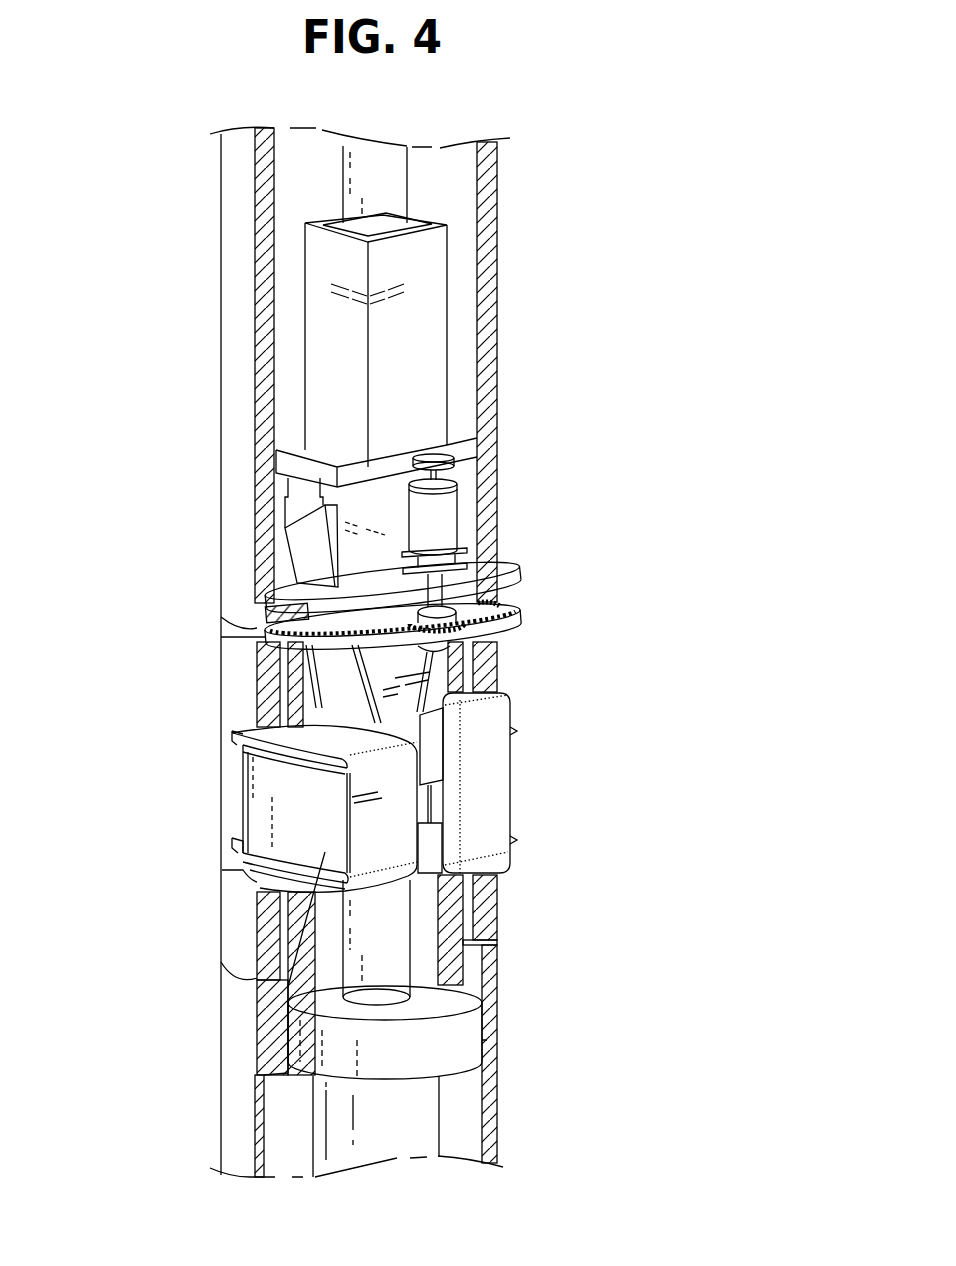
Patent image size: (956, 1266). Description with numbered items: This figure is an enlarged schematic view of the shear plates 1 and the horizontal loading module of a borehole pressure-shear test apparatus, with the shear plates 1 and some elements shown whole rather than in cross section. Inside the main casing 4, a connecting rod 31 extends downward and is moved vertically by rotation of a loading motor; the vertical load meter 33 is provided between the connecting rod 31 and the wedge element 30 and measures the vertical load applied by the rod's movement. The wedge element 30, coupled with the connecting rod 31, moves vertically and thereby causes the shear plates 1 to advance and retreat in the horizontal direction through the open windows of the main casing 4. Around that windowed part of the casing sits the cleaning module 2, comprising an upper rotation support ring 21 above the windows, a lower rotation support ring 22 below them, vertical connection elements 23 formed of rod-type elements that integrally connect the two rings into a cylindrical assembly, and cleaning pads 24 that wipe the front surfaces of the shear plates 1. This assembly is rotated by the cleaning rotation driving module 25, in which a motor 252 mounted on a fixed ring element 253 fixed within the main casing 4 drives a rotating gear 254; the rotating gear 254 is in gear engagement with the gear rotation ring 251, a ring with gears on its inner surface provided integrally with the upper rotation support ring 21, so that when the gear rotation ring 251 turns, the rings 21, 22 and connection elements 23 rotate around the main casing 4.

The shear plates 1 is at (495, 785).
The cleaning module 2 is at (282, 907).
The main casing 4 is at (230, 338).
The upper rotation support ring 21 is at (228, 675).
The lower rotation support ring 22 is at (309, 1014).
The vertical connection elements 23 is at (228, 800).
The cleaning pads 24 is at (228, 742).
The cleaning rotation driving module 25 is at (470, 560).
The wedge element 30 is at (337, 521).
The connecting rod 31 is at (353, 183).
The vertical load meter 33 is at (428, 303).
The gear rotation ring 251 is at (440, 631).
The motor 252 is at (445, 520).
The fixed ring element 253 is at (497, 568).
The rotating gear 254 is at (498, 603).